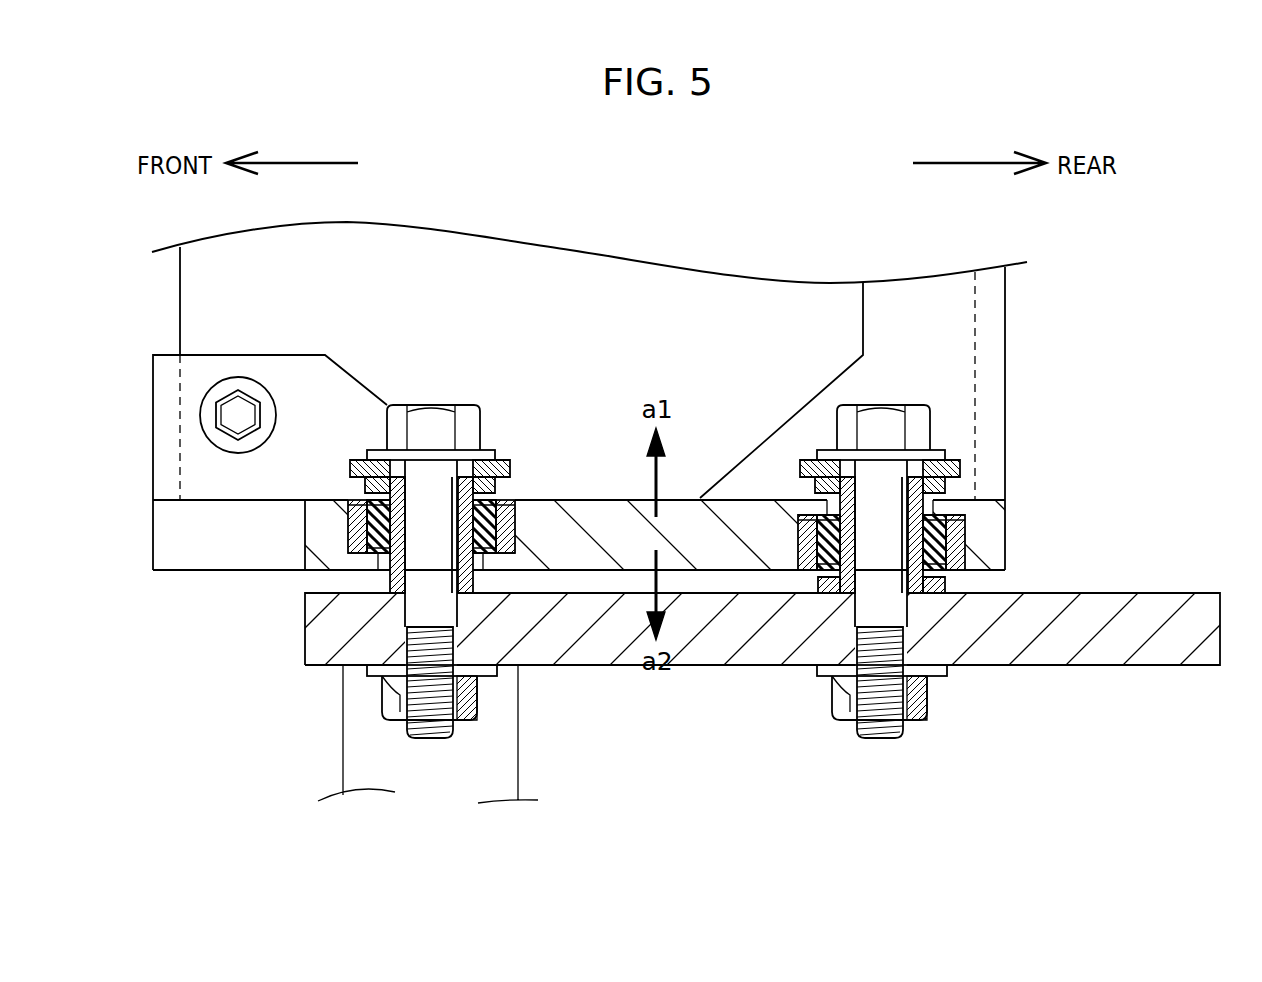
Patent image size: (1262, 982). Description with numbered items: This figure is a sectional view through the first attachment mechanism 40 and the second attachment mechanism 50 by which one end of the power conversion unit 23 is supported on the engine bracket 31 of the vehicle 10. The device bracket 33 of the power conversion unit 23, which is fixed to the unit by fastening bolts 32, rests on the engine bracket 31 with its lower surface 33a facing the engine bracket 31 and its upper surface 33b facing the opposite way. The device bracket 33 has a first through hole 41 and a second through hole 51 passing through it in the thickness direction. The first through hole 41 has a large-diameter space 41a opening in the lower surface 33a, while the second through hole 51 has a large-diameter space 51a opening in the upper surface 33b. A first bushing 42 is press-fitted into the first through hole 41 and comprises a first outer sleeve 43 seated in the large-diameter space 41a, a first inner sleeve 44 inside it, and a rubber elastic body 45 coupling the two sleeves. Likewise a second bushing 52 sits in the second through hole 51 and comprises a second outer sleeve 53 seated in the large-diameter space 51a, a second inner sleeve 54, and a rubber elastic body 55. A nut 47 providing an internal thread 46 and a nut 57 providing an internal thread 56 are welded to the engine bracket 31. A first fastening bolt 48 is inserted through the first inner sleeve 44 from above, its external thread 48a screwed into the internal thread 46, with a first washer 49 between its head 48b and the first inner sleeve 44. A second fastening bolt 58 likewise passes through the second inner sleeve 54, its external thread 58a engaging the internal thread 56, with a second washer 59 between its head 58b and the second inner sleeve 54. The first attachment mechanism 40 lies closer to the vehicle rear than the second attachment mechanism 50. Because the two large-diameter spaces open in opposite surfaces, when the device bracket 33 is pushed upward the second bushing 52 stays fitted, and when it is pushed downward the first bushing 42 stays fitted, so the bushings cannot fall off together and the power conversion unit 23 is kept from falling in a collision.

The vehicle body 10 is at (995, 425).
The power conversion unit 23 is at (600, 262).
The engine bracket 31 is at (305, 637).
The fastening bolts 32 is at (238, 405).
The device bracket 33 is at (555, 440).
The lower surface 33a is at (577, 572).
The upper surface 33b is at (592, 500).
The first attachment mechanism 40 is at (955, 423).
The first through hole 41 is at (822, 599).
The large-diameter space 41a is at (806, 570).
The first bushing 42 is at (966, 520).
The first outer sleeve 43 is at (955, 537).
The first inner sleeve 44 is at (918, 488).
The elastic body 45 is at (948, 555).
The internal thread 46 is at (898, 705).
The nut 47 is at (842, 723).
The first fastening bolt 48 is at (881, 557).
The external thread 48a is at (885, 740).
The head 48b is at (885, 415).
The first washer 49 is at (808, 466).
The second attachment mechanism 50 is at (503, 412).
The second through hole 51 is at (508, 496).
The large-diameter space 51a is at (512, 537).
The second bushing 52 is at (348, 511).
The second outer sleeve 53 is at (355, 525).
The second inner sleeve 54 is at (385, 488).
The elastic body 55 is at (380, 538).
The internal thread 56 is at (448, 705).
The nut 57 is at (392, 723).
The second fastening bolt 58 is at (440, 557).
The external thread 58a is at (435, 740).
The head 58b is at (428, 415).
The second washer 59 is at (358, 468).